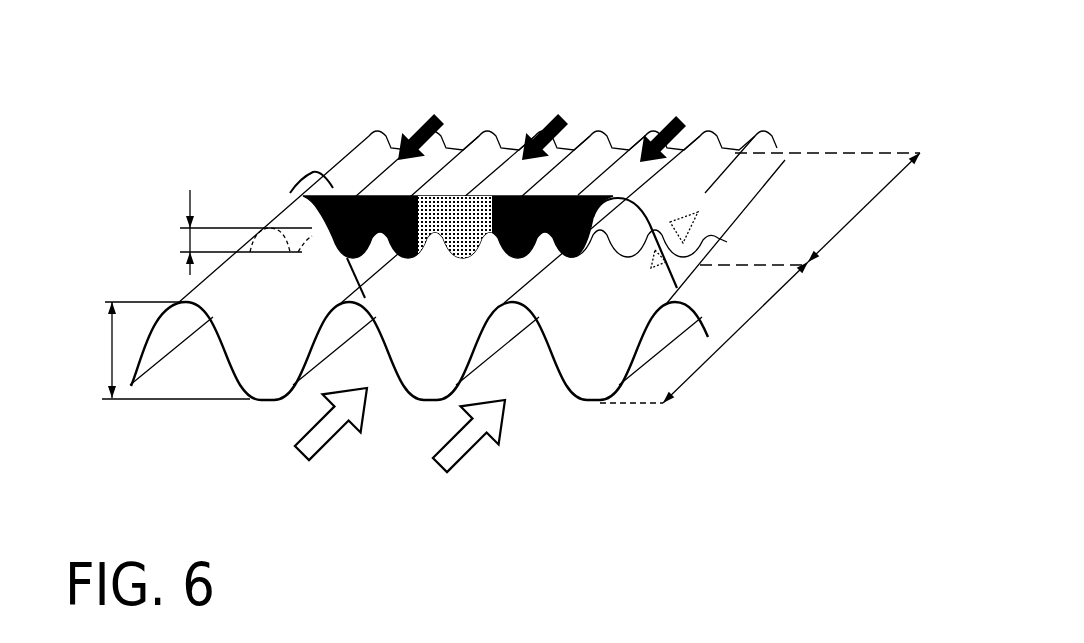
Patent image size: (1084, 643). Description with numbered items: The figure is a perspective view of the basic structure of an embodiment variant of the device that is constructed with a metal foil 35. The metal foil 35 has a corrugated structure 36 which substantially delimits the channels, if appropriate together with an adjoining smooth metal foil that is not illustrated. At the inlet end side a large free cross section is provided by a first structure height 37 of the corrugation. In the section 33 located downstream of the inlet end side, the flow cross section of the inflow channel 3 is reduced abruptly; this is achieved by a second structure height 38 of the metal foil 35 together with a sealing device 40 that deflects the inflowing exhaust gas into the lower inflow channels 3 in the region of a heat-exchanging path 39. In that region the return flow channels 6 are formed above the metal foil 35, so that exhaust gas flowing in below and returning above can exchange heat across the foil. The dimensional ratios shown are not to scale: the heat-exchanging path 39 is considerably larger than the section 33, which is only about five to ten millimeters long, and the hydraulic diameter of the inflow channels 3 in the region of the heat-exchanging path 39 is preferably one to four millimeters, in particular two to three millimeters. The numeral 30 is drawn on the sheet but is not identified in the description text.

The inflow channel 3 is at (523, 357).
The return flow channel 6 is at (616, 158).
The corrugated base sheet 30 is at (197, 370).
The section 33 is at (747, 320).
The metal foil 35 is at (357, 170).
The corrugated structure 36 is at (373, 121).
The first structure height 37 is at (108, 348).
The second structure height 38 is at (183, 240).
The heat-exchanging path 39 is at (867, 203).
The sealing device 40 is at (280, 200).